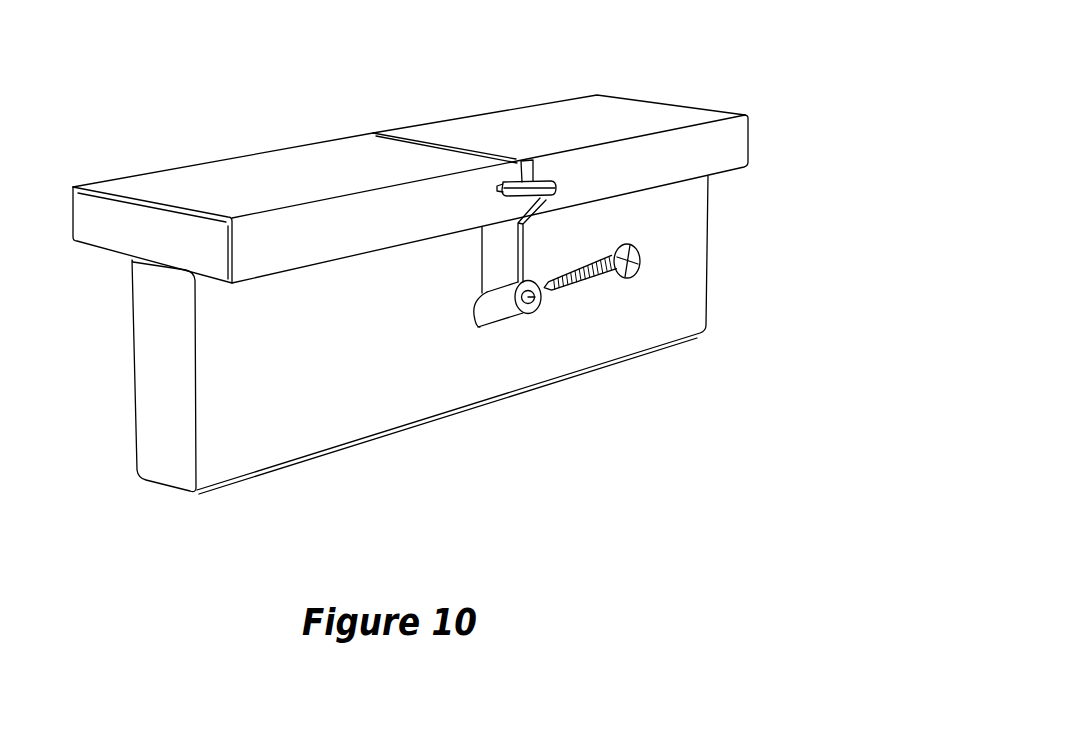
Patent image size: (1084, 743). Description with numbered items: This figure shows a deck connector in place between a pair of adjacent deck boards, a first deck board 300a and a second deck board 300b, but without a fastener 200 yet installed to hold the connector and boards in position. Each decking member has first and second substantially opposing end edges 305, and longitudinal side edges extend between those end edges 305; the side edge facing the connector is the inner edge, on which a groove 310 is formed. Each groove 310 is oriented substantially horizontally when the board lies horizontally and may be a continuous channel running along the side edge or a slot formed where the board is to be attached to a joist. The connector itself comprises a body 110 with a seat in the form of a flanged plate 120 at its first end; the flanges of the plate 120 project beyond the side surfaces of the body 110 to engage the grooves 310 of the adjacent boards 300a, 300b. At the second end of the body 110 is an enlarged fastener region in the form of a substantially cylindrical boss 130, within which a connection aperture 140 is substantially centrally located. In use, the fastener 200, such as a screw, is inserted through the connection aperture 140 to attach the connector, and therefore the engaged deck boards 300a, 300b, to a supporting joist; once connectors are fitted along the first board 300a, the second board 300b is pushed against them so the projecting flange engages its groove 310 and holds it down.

The body 110 is at (505, 237).
The flanged plate 120 is at (553, 178).
The boss 130 is at (500, 312).
The connection aperture 140 is at (546, 297).
The fastener 200 is at (632, 252).
The first deck board 300a is at (317, 153).
The second deck board 300b is at (441, 129).
The end edge 305 is at (289, 228).
The groove 310 is at (525, 183).